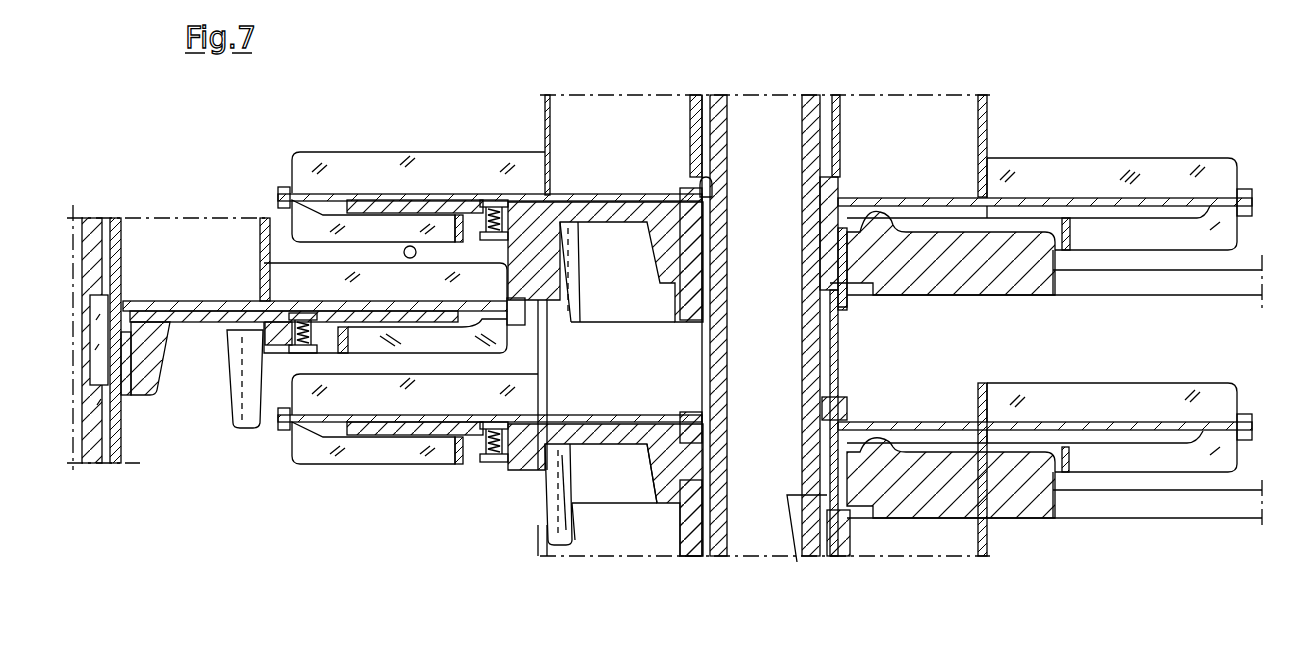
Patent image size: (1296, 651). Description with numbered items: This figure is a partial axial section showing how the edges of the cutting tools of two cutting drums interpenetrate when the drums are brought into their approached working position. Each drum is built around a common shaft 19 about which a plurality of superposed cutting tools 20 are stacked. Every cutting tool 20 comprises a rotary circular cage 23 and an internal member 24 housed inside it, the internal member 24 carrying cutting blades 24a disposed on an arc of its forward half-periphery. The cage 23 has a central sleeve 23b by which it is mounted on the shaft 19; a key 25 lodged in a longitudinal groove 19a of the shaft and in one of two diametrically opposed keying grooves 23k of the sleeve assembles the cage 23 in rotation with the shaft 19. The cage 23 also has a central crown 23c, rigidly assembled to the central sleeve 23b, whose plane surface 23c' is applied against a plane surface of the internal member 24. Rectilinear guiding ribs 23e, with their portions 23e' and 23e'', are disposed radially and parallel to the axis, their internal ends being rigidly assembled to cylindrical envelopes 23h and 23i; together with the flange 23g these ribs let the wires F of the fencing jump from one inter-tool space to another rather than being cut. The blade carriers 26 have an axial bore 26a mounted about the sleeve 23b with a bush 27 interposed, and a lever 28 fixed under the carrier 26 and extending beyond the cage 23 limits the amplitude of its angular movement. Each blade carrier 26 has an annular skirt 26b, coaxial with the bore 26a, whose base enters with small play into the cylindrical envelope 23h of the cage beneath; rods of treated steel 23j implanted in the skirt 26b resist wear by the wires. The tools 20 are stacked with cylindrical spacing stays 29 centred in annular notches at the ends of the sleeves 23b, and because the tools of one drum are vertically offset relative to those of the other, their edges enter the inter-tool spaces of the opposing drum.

The common shaft 19 is at (82, 242).
The longitudinal groove 19a is at (725, 175).
The cutting tool 20 is at (126, 210).
The rotary circular cage 23 is at (1133, 141).
The central sleeve 23b is at (857, 198).
The central crown 23c is at (1045, 341).
The plane surface 23c' is at (1045, 155).
The guiding rib 23e is at (404, 246).
The mirror panel lower part 23e' is at (373, 271).
The mirror panel upper part 23e'' is at (428, 233).
The flange 23g is at (285, 187).
The cylindrical envelope 23h is at (547, 107).
The cylindrical envelope 23i is at (1070, 227).
The rods of treated steel 23j is at (547, 502).
The keying groove 23k is at (720, 173).
The internal member 24 is at (431, 436).
The cutting blade 24a is at (418, 207).
The key 25 is at (500, 192).
The blade carrier 26 is at (150, 363).
The axial bore 26a is at (856, 250).
The annular skirt 26b is at (575, 540).
The bush 27 is at (850, 302).
The lever 28 is at (1150, 280).
The cylindrical spacing stay 29 is at (121, 240).
The wires F is at (404, 247).